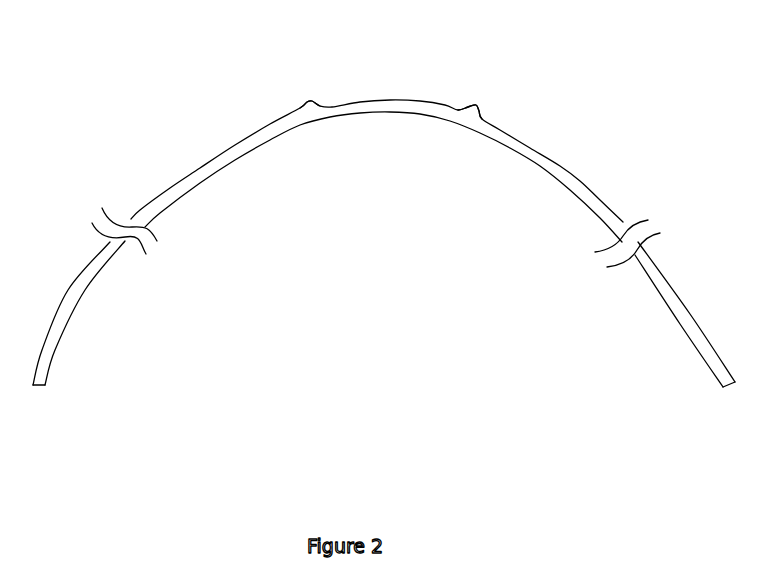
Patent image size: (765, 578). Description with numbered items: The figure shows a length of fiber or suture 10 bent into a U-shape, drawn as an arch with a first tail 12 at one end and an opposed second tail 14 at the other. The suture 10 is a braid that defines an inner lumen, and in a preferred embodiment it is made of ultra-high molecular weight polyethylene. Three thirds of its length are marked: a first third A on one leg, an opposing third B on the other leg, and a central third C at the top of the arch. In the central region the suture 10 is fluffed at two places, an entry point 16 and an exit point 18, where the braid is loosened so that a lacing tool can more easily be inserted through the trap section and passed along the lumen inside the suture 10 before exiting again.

The suture 10 is at (565, 133).
The first tail 12 is at (722, 389).
The second tail 14 is at (48, 390).
The entry point 16 is at (481, 109).
The exit point 18 is at (307, 104).
The first third A is at (625, 220).
The opposing third B is at (129, 214).
The central third C is at (389, 95).